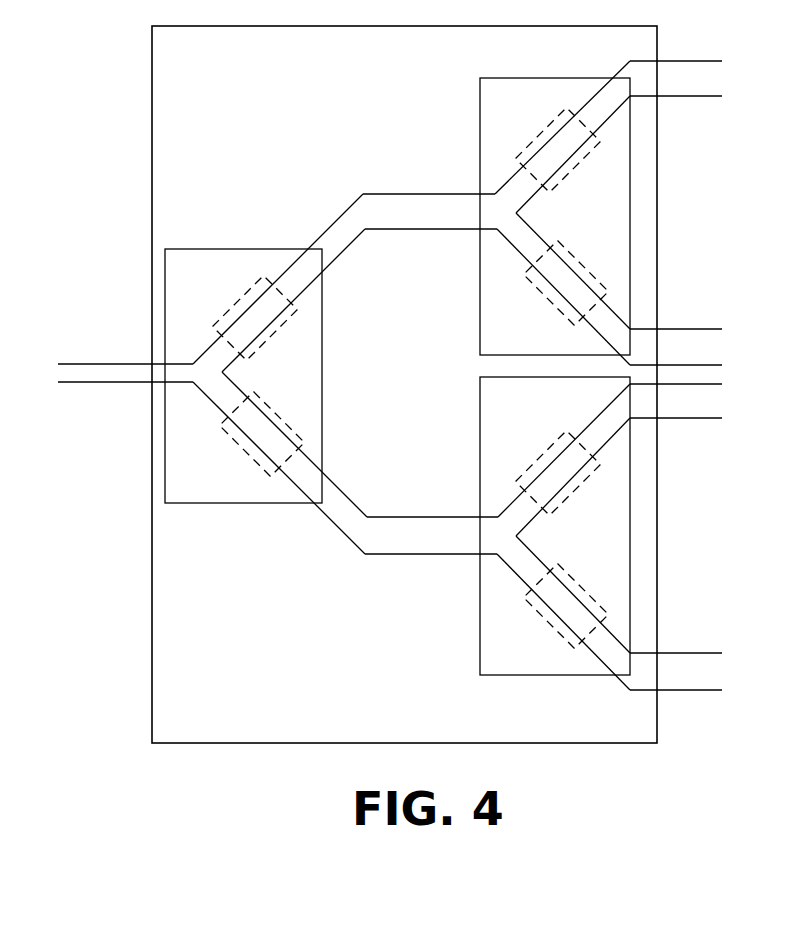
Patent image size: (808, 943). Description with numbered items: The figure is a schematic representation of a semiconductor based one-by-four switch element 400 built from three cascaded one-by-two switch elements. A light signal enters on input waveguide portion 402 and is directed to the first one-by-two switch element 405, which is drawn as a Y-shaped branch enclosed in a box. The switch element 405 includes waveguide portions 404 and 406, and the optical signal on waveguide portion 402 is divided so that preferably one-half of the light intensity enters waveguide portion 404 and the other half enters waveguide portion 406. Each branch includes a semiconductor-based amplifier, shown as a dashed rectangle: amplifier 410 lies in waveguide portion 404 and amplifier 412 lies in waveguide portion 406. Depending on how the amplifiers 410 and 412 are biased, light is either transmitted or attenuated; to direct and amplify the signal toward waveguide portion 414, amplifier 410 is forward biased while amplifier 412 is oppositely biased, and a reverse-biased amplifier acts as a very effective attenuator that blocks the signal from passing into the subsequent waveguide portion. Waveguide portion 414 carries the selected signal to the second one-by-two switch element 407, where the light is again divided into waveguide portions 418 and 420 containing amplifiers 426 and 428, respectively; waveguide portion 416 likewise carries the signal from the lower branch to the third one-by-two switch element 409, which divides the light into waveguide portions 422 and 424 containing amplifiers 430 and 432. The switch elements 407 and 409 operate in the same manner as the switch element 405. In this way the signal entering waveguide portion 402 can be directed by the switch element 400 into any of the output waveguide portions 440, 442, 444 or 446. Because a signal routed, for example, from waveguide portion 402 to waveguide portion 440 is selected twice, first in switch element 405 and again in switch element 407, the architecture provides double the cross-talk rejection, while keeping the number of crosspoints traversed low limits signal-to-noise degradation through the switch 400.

The semiconductor based switch element 400 is at (200, 57).
The waveguide portion 402 is at (100, 364).
The waveguide portion 404 is at (205, 355).
The 1×2 switch element 405 is at (233, 281).
The waveguide portion 406 is at (203, 393).
The 1×2 switch element 407 is at (535, 109).
The 1×2 switch element 409 is at (535, 409).
The semiconductor-based amplifier 410 is at (273, 337).
The semiconductor-based amplifier 412 is at (247, 457).
The waveguide portion 414 is at (422, 193).
The waveguide portion 416 is at (453, 517).
The waveguide portion 418 is at (513, 183).
The waveguide portion 420 is at (507, 243).
The waveguide portion 422 is at (508, 507).
The waveguide portion 424 is at (510, 572).
The semiconductor-based amplifier 426 is at (577, 167).
The semiconductor-based amplifier 428 is at (550, 302).
The semiconductor-based amplifier 430 is at (573, 490).
The semiconductor-based amplifier 432 is at (550, 625).
The waveguide portion 440 is at (677, 60).
The waveguide portion 442 is at (682, 329).
The waveguide portion 444 is at (702, 418).
The waveguide portion 446 is at (700, 652).